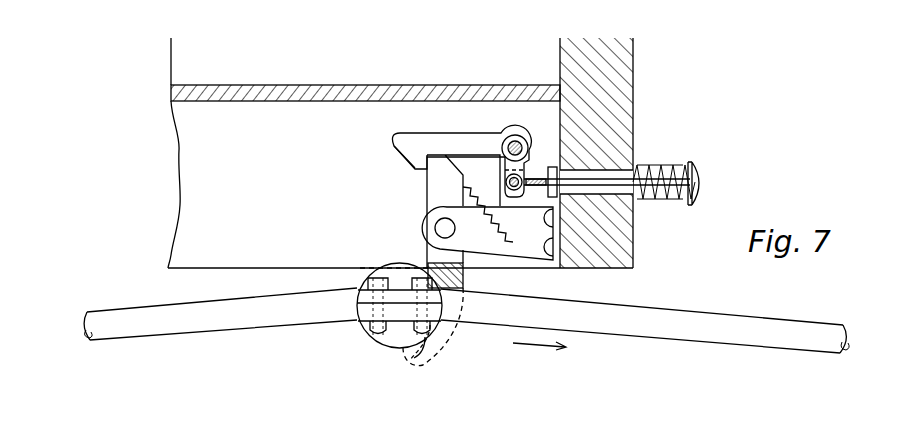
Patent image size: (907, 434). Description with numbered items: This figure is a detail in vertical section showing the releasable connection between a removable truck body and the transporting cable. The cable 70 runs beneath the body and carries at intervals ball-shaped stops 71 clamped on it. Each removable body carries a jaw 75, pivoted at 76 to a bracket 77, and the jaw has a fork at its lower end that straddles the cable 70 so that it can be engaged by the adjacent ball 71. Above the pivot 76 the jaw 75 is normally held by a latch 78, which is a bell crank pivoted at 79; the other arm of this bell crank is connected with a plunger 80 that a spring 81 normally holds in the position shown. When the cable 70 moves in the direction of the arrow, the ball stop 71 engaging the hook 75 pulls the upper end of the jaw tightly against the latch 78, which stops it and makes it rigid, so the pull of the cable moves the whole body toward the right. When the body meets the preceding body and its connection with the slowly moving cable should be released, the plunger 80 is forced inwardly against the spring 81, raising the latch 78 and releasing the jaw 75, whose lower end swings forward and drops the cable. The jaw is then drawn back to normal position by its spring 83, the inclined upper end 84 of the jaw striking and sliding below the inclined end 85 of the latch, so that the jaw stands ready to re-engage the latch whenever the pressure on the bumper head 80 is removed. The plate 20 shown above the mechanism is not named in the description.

The table plate 20 is at (528, 85).
The cable 70 is at (650, 313).
The stop 71 is at (386, 342).
The jaw 75 is at (442, 343).
The pivot 76 is at (436, 229).
The bracket 77 is at (487, 233).
The latch 78 is at (448, 133).
The pivot 79 is at (527, 141).
The plunger 80 is at (701, 186).
The spring 81 is at (661, 198).
The spring 83 is at (487, 183).
The inclined upper end 84 is at (463, 211).
The inclined end 85 is at (401, 157).